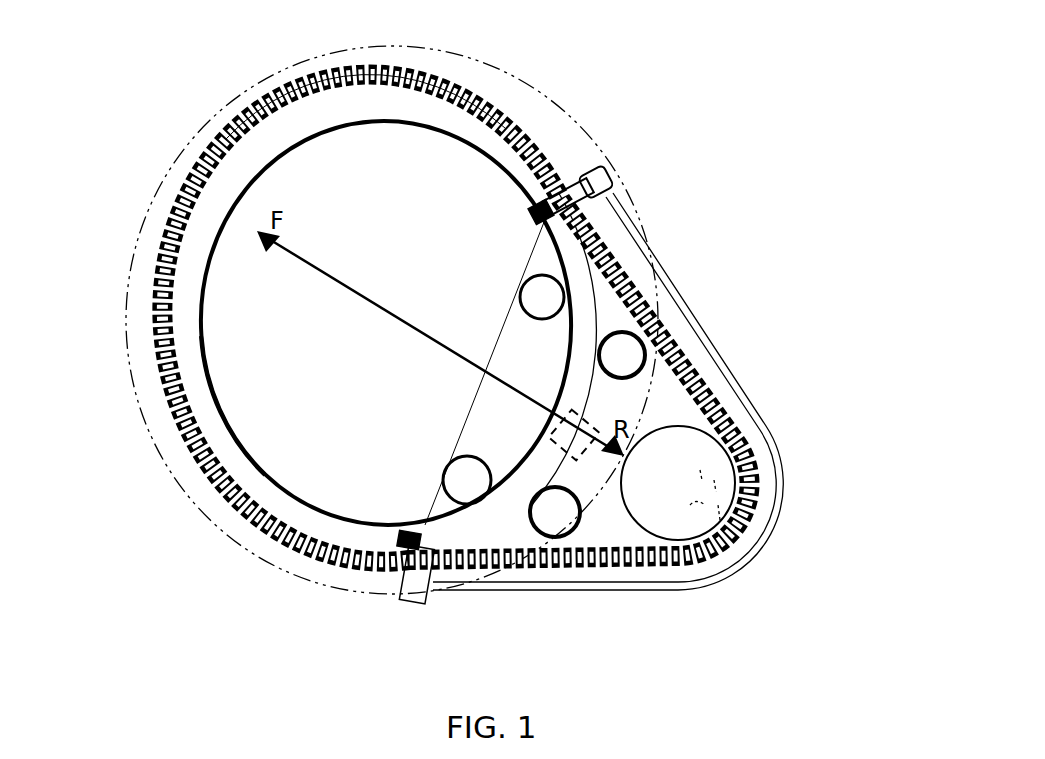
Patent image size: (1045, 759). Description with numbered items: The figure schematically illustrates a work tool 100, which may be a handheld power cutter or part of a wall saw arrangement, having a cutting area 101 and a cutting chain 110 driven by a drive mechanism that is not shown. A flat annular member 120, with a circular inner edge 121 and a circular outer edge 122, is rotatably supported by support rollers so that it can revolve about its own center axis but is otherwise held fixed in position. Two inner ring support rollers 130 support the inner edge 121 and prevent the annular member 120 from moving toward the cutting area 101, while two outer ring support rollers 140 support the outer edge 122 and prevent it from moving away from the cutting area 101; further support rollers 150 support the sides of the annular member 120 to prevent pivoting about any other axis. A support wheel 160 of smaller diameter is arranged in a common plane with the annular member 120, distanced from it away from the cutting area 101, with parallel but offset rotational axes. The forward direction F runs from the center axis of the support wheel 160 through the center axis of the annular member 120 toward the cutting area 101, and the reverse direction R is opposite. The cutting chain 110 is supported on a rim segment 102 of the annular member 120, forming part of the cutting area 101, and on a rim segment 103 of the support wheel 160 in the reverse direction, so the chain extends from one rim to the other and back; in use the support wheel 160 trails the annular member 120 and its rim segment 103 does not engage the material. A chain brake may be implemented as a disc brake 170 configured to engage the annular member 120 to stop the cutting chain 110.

The work tool 100 is at (120, 77).
The cutting area 101 is at (436, 60).
The rim segment of the annular member 102 is at (323, 98).
The rim segment of the support wheel 103 is at (678, 483).
The cutting chain 110 is at (333, 562).
The annular member 120 is at (193, 355).
The inner edge 121 is at (243, 440).
The outer edge 122 is at (173, 394).
The inner ring support rollers 130 is at (524, 296).
The outer ring support rollers 140 is at (640, 375).
The support rollers 150 is at (548, 208).
The support wheel 160 is at (638, 520).
The disc brake 170 is at (551, 433).